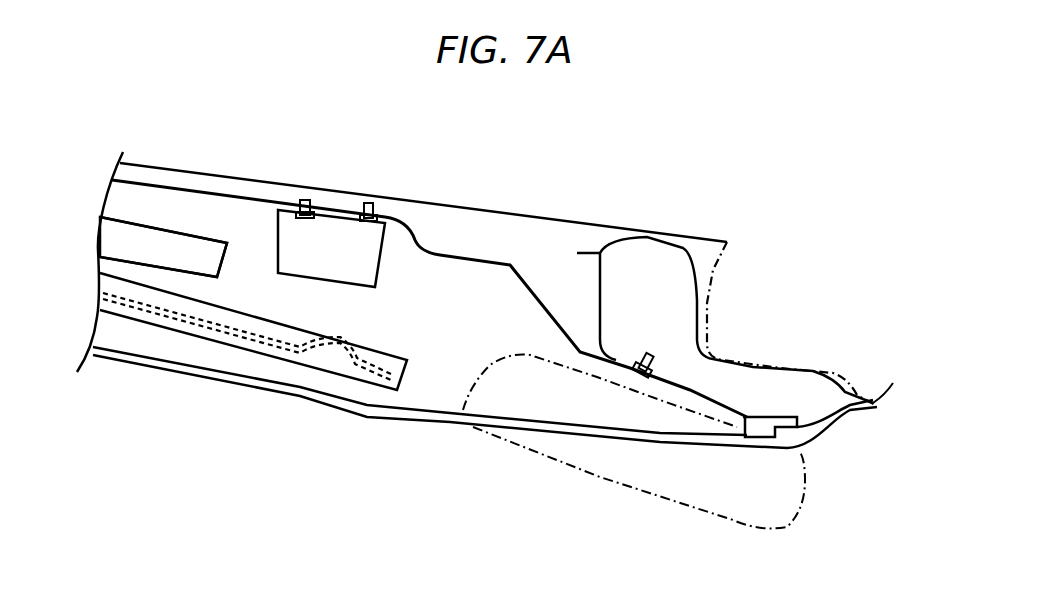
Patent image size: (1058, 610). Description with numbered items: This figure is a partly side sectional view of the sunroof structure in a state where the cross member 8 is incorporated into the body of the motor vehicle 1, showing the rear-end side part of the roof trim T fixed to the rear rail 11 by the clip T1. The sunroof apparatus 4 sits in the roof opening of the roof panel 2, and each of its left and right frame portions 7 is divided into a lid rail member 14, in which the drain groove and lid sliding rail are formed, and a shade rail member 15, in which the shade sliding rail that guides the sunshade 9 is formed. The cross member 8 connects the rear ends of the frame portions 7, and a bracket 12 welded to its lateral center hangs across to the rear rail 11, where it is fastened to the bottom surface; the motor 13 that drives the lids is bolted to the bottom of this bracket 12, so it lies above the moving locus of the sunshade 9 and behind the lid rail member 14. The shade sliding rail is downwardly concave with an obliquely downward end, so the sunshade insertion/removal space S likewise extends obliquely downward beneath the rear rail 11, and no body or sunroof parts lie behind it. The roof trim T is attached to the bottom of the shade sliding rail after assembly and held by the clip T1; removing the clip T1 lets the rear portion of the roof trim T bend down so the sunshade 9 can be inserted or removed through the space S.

The motor vehicle 1 is at (738, 230).
The roof panel 2 is at (493, 210).
The sunroof apparatus 4 is at (335, 374).
The frame portion 7 is at (122, 320).
The cross member 8 is at (176, 181).
The sunshade 9 is at (220, 340).
The rear rail 11 is at (647, 237).
The bracket 12 is at (440, 255).
The motor 13 is at (338, 223).
The lid rail member 14 is at (148, 267).
The shade rail member 15 is at (273, 343).
The roof trim T is at (423, 427).
The clip T1 is at (774, 418).
The sunshade insertion/removal space S is at (522, 447).